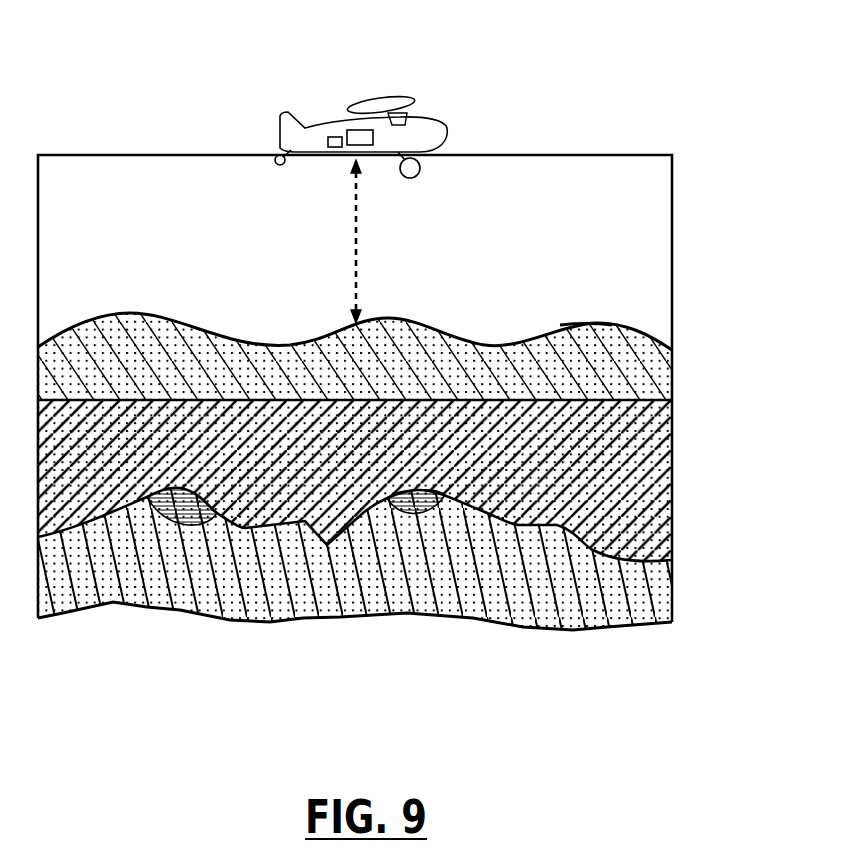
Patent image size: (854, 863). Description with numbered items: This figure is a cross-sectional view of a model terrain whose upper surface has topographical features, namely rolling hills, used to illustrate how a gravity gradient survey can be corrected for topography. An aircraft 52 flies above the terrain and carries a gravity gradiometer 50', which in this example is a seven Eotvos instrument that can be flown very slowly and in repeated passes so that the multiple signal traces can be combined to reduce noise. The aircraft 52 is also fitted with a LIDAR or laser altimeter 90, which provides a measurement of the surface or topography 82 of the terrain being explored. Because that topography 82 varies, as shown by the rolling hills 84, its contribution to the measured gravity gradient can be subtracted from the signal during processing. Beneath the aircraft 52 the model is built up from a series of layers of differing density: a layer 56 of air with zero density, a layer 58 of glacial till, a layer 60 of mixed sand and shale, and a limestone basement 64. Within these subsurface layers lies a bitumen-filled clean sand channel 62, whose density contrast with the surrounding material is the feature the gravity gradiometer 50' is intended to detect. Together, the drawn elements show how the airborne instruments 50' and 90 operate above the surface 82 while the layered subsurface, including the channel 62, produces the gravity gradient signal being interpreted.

The gravity gradiometer 50' is at (274, 93).
The LIDAR or laser altimeter 90 is at (357, 130).
The aircraft 52 is at (350, 90).
The rolling hills 84 is at (148, 314).
The layer of air 56 is at (657, 253).
The surface or topography 82 is at (604, 318).
The layer of glacial till 58 is at (657, 372).
The layer of mixed sand and shale 60 is at (660, 473).
The limestone basement 64 is at (665, 592).
The bitumen-filled clean sand channel 62 is at (187, 618).